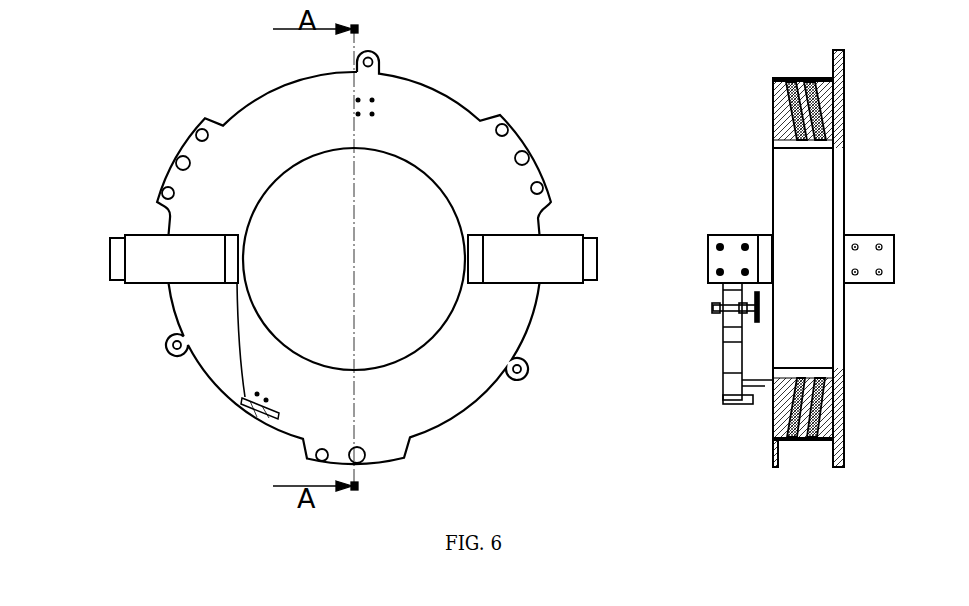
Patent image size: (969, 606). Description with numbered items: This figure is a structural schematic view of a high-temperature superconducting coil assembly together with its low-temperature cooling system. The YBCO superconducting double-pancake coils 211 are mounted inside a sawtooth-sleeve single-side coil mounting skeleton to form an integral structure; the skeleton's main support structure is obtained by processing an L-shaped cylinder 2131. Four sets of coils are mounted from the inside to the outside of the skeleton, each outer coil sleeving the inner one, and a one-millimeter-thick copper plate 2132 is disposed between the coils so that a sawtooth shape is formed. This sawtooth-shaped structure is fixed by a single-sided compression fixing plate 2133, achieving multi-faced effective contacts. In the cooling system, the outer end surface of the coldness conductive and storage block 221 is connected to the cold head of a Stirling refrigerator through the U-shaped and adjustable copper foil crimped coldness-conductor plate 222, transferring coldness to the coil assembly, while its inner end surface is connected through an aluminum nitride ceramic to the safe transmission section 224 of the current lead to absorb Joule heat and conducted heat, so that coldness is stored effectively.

The YBCO superconducting double-pancake coils 211 is at (840, 157).
The L-shaped cylinder 2131 is at (773, 130).
The copper plate 2132 is at (773, 100).
The single-sided compression fixing plate 2133 is at (920, 60).
The coldness conductive and storage block 221 is at (172, 260).
The U-shaped and adjustable copper foil crimped coldness-conductor plate 222 is at (120, 257).
The safe transmission section of the current lead 224 is at (242, 330).